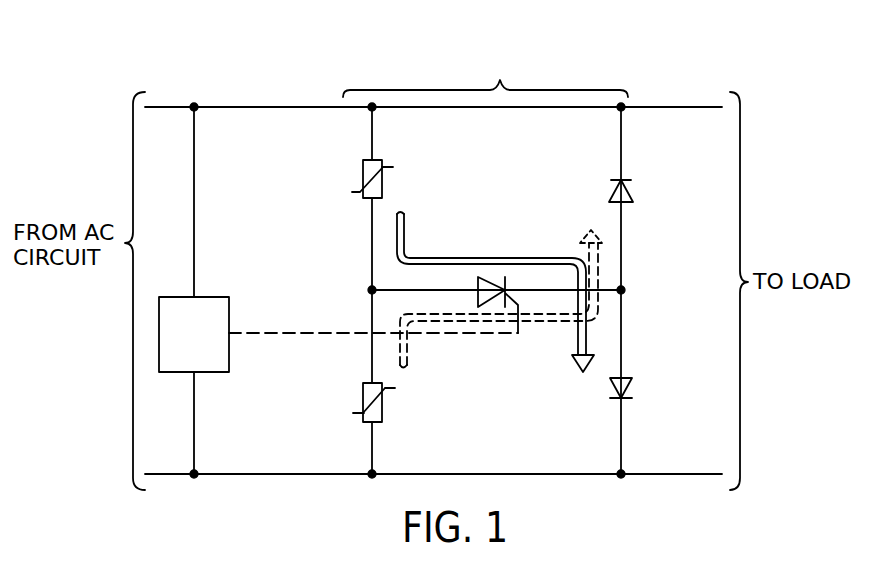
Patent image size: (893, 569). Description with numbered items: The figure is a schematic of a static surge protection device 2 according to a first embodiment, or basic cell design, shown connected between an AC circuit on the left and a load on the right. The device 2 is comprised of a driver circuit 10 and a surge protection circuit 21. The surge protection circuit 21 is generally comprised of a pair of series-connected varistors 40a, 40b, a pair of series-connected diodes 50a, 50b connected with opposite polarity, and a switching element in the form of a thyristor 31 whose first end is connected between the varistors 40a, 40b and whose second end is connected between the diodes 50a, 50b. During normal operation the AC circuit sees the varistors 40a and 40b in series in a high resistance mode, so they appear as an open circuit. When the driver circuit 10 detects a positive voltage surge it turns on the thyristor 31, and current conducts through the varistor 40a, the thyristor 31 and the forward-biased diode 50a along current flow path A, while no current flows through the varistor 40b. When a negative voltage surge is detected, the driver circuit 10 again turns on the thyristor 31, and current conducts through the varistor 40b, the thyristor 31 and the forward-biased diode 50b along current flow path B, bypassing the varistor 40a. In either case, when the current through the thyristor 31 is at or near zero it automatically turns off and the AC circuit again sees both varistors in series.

The static surge protection device 2 is at (222, 77).
The driver circuit 10 is at (206, 303).
The surge protection circuit 21 is at (500, 80).
The thyristor 31 is at (493, 283).
The varistor 40a is at (368, 175).
The varistor 40b is at (365, 398).
The diode 50a is at (626, 386).
The diode 50b is at (624, 193).
The current flow path A is at (523, 258).
The current flow path B is at (540, 320).